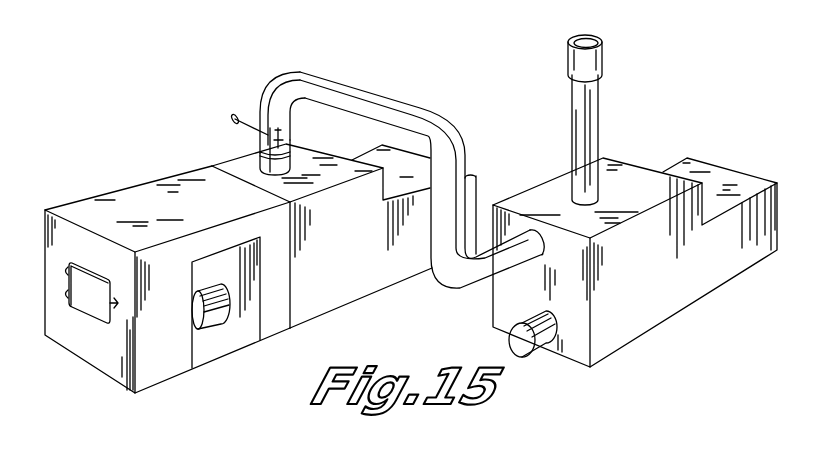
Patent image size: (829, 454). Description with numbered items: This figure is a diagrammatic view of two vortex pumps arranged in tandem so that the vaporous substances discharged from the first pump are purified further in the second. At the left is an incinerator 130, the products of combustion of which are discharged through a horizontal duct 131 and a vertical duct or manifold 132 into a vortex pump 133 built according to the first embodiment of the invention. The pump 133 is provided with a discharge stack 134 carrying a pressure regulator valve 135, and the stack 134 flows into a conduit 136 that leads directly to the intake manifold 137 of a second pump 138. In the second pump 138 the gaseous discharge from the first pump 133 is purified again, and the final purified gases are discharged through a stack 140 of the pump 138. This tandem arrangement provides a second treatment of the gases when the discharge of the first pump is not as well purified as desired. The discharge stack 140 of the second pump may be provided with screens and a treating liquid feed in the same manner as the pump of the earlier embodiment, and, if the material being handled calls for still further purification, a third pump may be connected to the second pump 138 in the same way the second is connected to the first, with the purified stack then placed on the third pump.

The incinerator 130 is at (152, 375).
The horizontal duct 131 is at (217, 240).
The vertical duct or manifold 132 is at (283, 327).
The vortex pump 133 is at (325, 290).
The discharge stack 134 is at (275, 86).
The pressure regulator valve 135 is at (260, 147).
The conduit 136 is at (457, 120).
The intake manifold 137 is at (598, 350).
The second pump 138 is at (643, 312).
The stack 140 is at (597, 128).